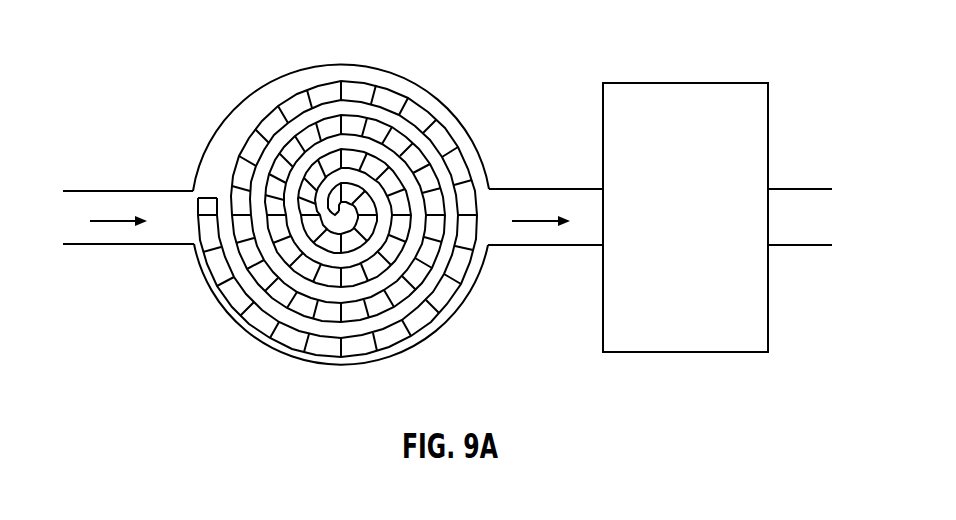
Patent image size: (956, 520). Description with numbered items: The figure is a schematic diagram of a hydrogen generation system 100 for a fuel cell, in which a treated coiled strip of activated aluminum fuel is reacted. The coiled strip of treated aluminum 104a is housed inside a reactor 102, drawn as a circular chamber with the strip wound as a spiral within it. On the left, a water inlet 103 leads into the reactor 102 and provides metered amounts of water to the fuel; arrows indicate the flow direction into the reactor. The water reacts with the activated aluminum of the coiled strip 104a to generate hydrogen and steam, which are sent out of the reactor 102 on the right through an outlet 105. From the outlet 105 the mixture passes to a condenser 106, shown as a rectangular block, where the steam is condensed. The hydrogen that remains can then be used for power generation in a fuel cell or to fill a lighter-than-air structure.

The hydrogen generation system 100 is at (166, 48).
The reactor 102 is at (222, 125).
The water inlet 103 is at (128, 247).
The coiled strip of treated aluminum 104a is at (456, 128).
The outlet 105 is at (550, 247).
The condenser 106 is at (686, 82).